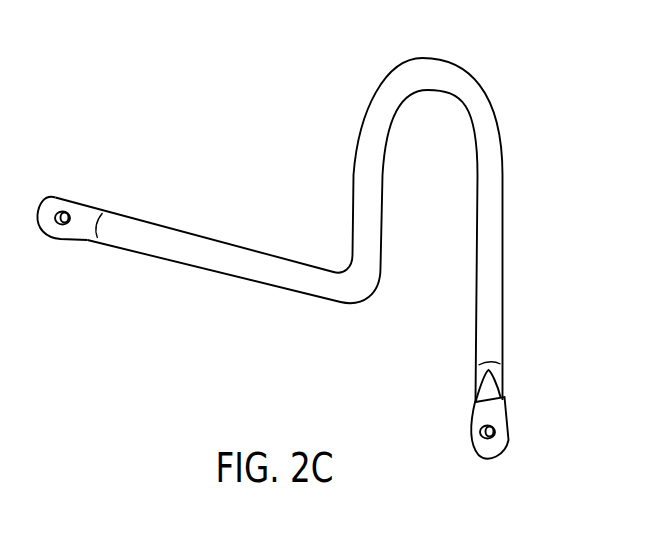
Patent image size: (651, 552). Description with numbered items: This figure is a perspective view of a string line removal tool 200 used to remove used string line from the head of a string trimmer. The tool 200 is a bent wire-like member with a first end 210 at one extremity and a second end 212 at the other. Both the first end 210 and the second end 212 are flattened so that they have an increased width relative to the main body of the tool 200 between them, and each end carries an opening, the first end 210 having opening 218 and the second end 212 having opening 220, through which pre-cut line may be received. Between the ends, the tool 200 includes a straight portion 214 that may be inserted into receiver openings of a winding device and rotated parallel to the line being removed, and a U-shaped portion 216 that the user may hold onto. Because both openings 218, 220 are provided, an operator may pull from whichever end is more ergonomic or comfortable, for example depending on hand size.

The string line removal tool 200 is at (297, 130).
The first end 210 is at (74, 199).
The opening 218 is at (64, 212).
The straight portion 214 is at (218, 252).
The U-shaped portion 216 is at (448, 78).
The second end 212 is at (527, 410).
The opening 220 is at (494, 428).